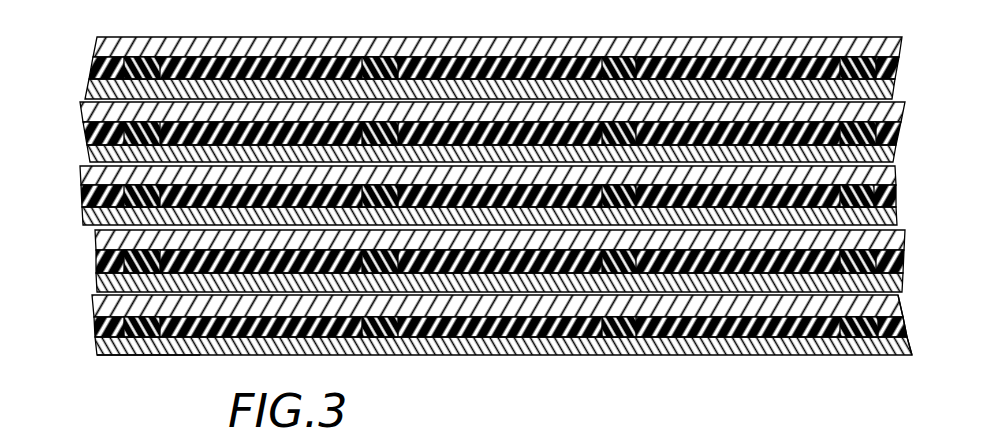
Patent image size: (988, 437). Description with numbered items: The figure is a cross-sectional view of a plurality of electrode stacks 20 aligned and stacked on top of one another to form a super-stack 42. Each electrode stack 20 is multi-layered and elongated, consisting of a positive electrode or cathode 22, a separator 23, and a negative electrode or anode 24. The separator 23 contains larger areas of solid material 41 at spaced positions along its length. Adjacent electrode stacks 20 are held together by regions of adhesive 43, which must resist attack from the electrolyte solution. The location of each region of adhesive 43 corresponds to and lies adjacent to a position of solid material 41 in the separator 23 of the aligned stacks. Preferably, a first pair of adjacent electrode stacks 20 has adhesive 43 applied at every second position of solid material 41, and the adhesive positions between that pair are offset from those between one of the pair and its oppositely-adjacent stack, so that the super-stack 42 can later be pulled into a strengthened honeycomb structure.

The electrode stack 20 is at (73, 202).
The cathode 22 is at (573, 300).
The separator 23 is at (675, 327).
The anode 24 is at (553, 347).
The solid material 41 is at (383, 313).
The super-stack 42 is at (186, 364).
The adhesive 43 is at (892, 357).